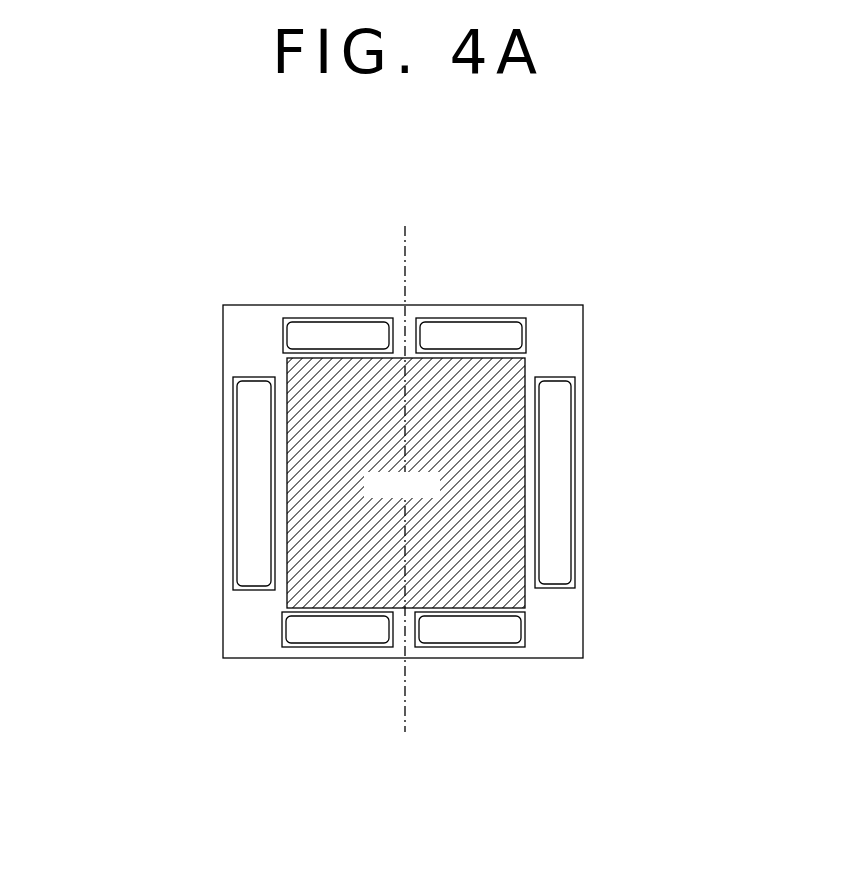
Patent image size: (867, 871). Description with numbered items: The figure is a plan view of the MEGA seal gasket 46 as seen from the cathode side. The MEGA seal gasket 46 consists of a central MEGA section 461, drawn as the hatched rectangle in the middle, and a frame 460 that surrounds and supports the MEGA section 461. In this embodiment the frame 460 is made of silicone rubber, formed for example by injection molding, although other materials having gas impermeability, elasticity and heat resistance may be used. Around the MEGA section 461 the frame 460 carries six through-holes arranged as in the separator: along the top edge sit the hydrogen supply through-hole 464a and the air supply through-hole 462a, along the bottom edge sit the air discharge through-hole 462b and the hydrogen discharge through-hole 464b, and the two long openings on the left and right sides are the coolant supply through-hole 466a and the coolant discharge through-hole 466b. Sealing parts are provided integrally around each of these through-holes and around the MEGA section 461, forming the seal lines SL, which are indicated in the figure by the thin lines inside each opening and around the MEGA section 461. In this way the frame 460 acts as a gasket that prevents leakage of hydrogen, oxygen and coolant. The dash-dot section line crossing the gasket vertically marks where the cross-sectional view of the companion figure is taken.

The MEGA seal gasket 46 is at (95, 212).
The frame 460 is at (565, 305).
The MEGA section 461 is at (512, 372).
The air supply through-hole 462a is at (486, 318).
The air discharge through-hole 462b is at (318, 647).
The hydrogen supply through-hole 464a is at (334, 318).
The hydrogen discharge through-hole 464b is at (472, 647).
The coolant supply through-hole 466a is at (247, 377).
The coolant discharge through-hole 466b is at (553, 588).
The seal line SL is at (272, 603).